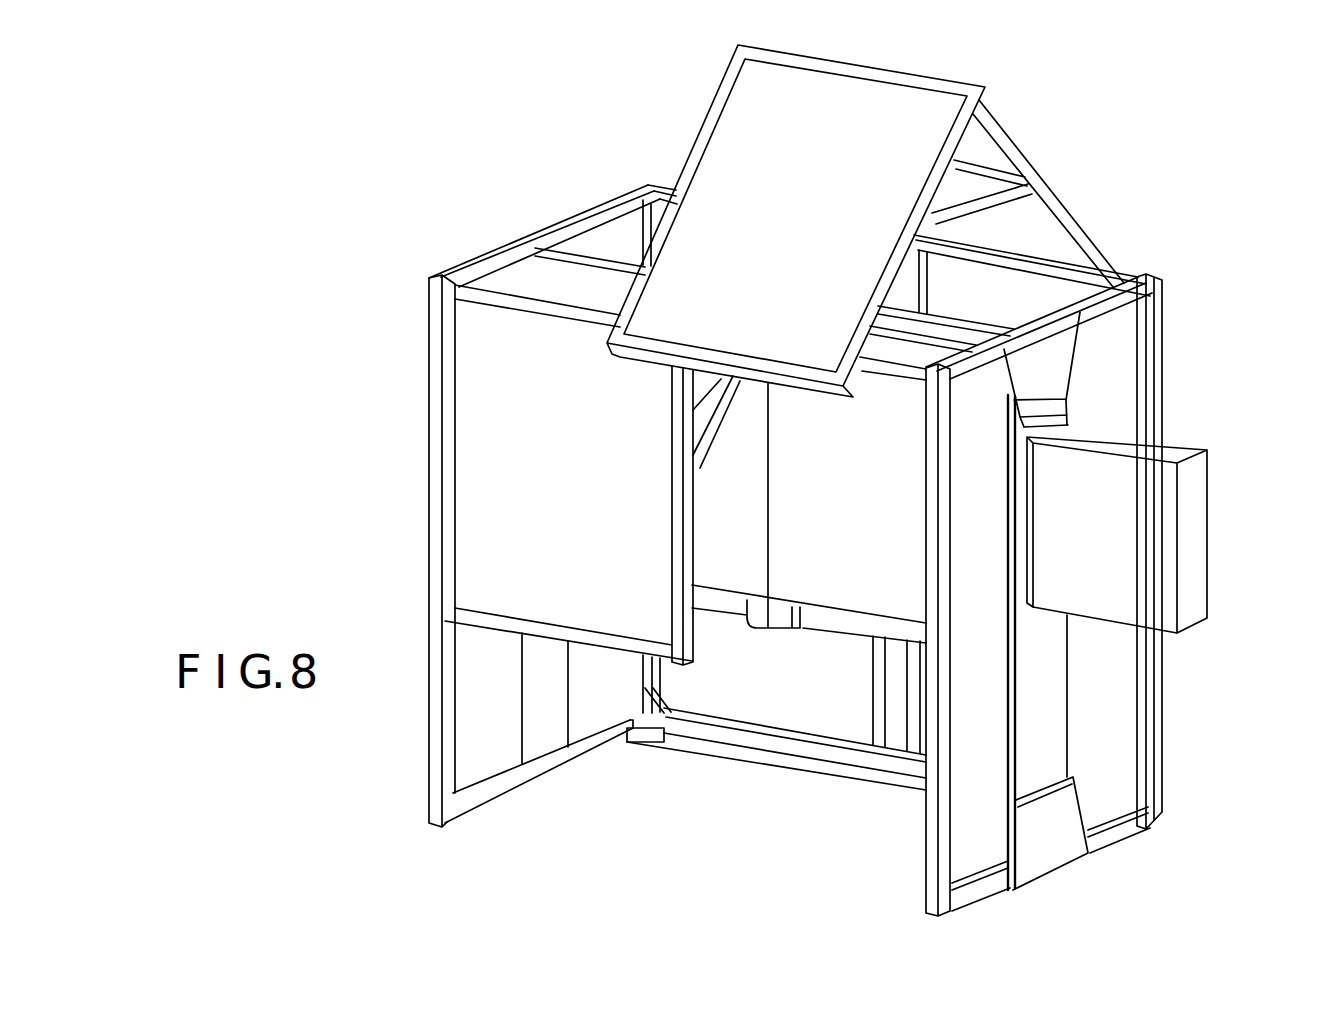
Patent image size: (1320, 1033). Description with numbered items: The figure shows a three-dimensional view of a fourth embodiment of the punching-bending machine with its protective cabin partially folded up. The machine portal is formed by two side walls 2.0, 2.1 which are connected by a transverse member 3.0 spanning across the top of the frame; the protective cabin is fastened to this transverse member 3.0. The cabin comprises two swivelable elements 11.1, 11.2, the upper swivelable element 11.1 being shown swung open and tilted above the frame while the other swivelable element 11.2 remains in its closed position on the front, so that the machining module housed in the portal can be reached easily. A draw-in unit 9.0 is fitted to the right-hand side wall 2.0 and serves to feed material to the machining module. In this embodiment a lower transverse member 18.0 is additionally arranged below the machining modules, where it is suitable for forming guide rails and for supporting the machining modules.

The swivelable element 11.1 is at (745, 147).
The swivelable element 11.2 is at (483, 358).
The transverse member 3.0 is at (957, 333).
The draw-in unit 9.0 is at (1190, 532).
The side wall 2.0 is at (1102, 760).
The side wall 2.1 is at (463, 735).
The lower transverse member 18.0 is at (847, 627).